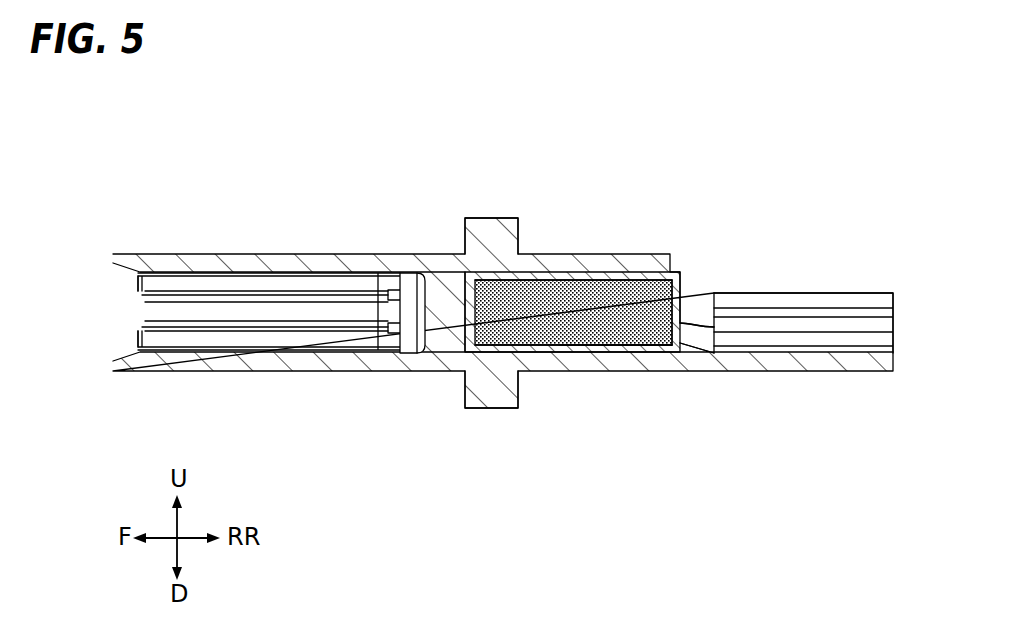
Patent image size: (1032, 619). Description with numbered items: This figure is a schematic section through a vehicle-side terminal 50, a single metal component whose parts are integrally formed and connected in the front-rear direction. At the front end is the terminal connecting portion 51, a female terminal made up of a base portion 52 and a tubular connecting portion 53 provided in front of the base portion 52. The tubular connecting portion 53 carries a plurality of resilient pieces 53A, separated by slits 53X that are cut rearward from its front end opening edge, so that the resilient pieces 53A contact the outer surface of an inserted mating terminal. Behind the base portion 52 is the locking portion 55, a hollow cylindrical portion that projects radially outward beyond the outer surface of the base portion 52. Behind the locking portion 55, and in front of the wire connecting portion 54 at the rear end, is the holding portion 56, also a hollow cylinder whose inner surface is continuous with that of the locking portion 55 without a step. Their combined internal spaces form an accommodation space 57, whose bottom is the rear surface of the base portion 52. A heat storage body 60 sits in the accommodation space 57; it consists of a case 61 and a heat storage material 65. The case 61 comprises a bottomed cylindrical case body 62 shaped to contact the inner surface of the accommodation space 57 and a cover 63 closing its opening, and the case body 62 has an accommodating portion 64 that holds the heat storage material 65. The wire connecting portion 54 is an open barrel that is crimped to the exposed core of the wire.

The vehicle-side terminal 50 is at (503, 269).
The terminal connecting portion 51 is at (288, 255).
The base portion 52 is at (417, 279).
The tubular connecting portion 53 is at (270, 277).
The resilient piece 53A is at (272, 262).
The slit 53X is at (186, 293).
The wire connecting portion 54 is at (810, 298).
The locking portion 55 is at (490, 223).
The holding portion 56 is at (598, 256).
The accommodation space 57 is at (548, 350).
The heat storage body 60 is at (572, 312).
The case 61 is at (679, 261).
The case body 62 is at (650, 278).
The cover 63 is at (701, 283).
The accommodating portion 64 is at (577, 346).
The heat storage material 65 is at (640, 338).